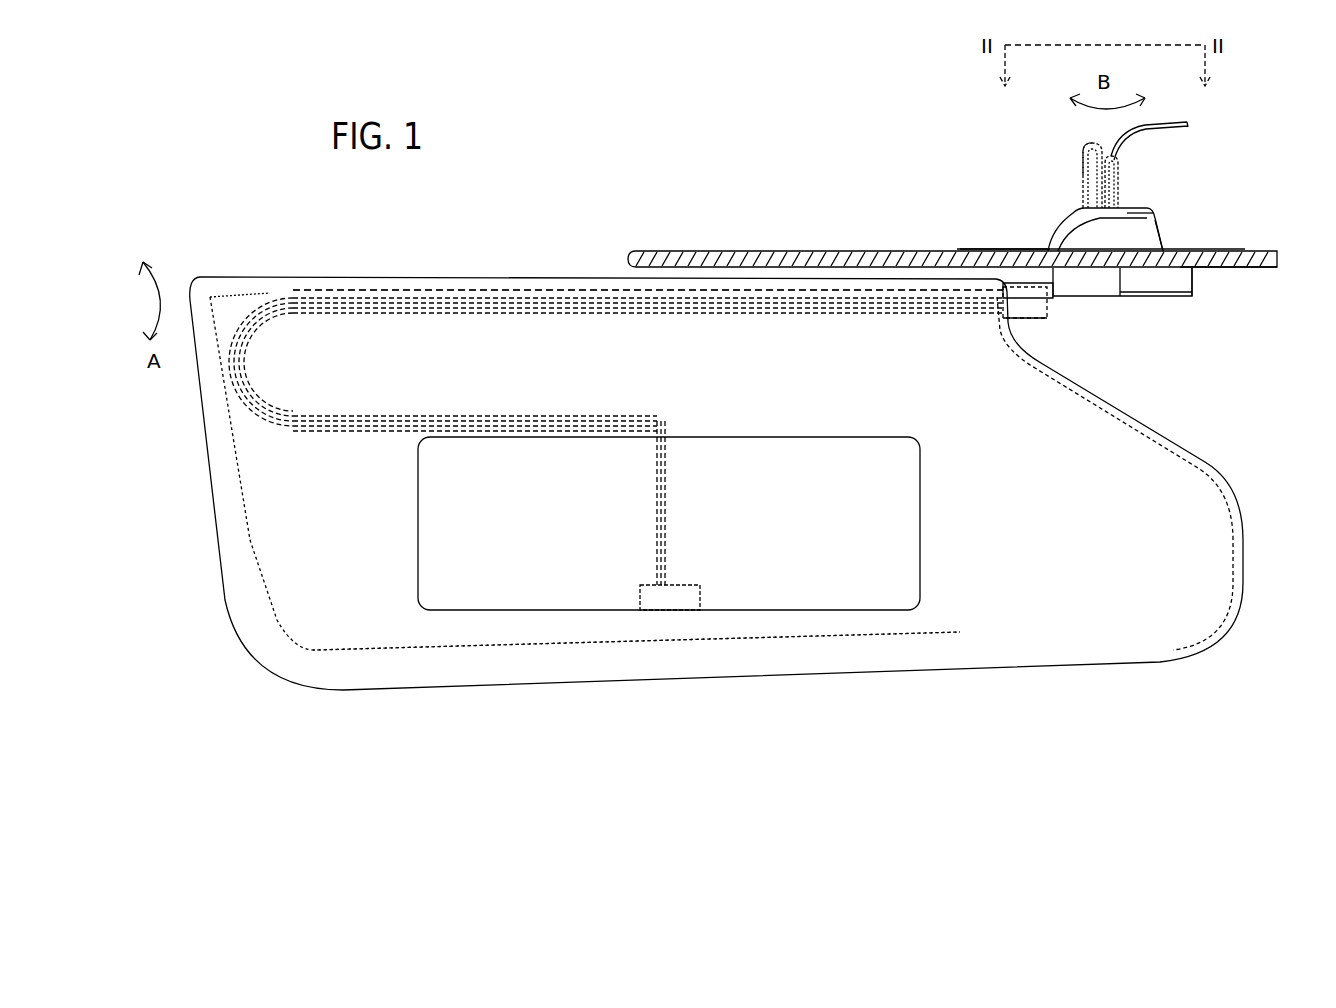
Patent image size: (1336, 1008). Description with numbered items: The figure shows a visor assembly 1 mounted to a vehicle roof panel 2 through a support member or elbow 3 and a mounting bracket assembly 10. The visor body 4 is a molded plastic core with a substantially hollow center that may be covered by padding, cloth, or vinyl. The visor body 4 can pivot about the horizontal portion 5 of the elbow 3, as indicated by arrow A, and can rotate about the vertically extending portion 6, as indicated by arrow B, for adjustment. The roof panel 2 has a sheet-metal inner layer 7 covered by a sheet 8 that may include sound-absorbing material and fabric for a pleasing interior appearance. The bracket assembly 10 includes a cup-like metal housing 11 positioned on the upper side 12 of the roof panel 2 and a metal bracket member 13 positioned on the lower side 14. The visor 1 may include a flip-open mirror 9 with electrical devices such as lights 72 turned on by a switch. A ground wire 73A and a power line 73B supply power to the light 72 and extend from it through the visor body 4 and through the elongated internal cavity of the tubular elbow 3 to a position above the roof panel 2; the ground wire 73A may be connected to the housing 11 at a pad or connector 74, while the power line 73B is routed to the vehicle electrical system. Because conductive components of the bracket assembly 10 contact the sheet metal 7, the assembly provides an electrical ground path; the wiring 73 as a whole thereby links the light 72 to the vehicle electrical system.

The visor assembly 1 is at (648, 692).
The vehicle roof panel 2 is at (760, 250).
The elbow 3 is at (1083, 297).
The visor body 4 is at (320, 363).
The horizontal portion 5 is at (1053, 303).
The vertically extending portion 6 is at (1118, 180).
The inner layer 7 is at (1000, 250).
The sheet 8 is at (1245, 268).
The flip-open mirror 9 is at (417, 548).
The mounting bracket assembly 10 is at (1183, 219).
The housing 11 is at (1073, 217).
The upper side 12 is at (1207, 250).
The bracket member 13 is at (1190, 316).
The lower side 14 is at (1213, 270).
The light 72 is at (637, 602).
The flat cable 73 is at (880, 625).
The ground wire 73A is at (1087, 150).
The power line 73B is at (1170, 122).
The connector 74 is at (1083, 200).